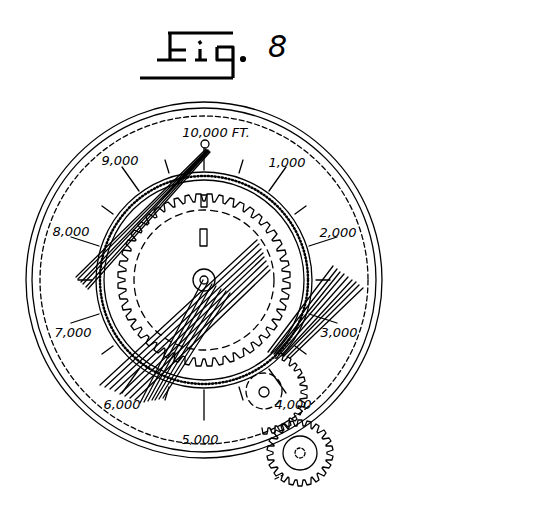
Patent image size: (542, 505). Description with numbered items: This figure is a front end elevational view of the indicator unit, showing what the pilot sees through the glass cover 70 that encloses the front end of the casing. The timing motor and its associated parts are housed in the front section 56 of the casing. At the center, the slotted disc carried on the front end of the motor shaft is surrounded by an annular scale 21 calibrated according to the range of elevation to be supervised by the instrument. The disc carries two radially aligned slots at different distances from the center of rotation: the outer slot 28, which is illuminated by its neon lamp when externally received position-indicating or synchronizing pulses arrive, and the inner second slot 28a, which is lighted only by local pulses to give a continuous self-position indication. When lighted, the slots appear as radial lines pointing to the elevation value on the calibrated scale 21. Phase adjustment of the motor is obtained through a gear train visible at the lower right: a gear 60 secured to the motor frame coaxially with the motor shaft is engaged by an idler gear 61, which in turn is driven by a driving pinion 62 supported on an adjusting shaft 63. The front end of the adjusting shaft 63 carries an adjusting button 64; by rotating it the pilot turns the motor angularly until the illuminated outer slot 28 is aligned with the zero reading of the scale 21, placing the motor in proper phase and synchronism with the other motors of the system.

The annular scale 21 is at (293, 217).
The slot 28 is at (200, 206).
The second slot 28a is at (199, 246).
The front section of the casing 56 is at (370, 343).
The gear 60 is at (292, 266).
The idler gear 61 is at (307, 377).
The driving pinion 62 is at (330, 441).
The adjusting shaft 63 is at (275, 479).
The adjusting button 64 is at (318, 457).
The glass cover 70 is at (357, 302).